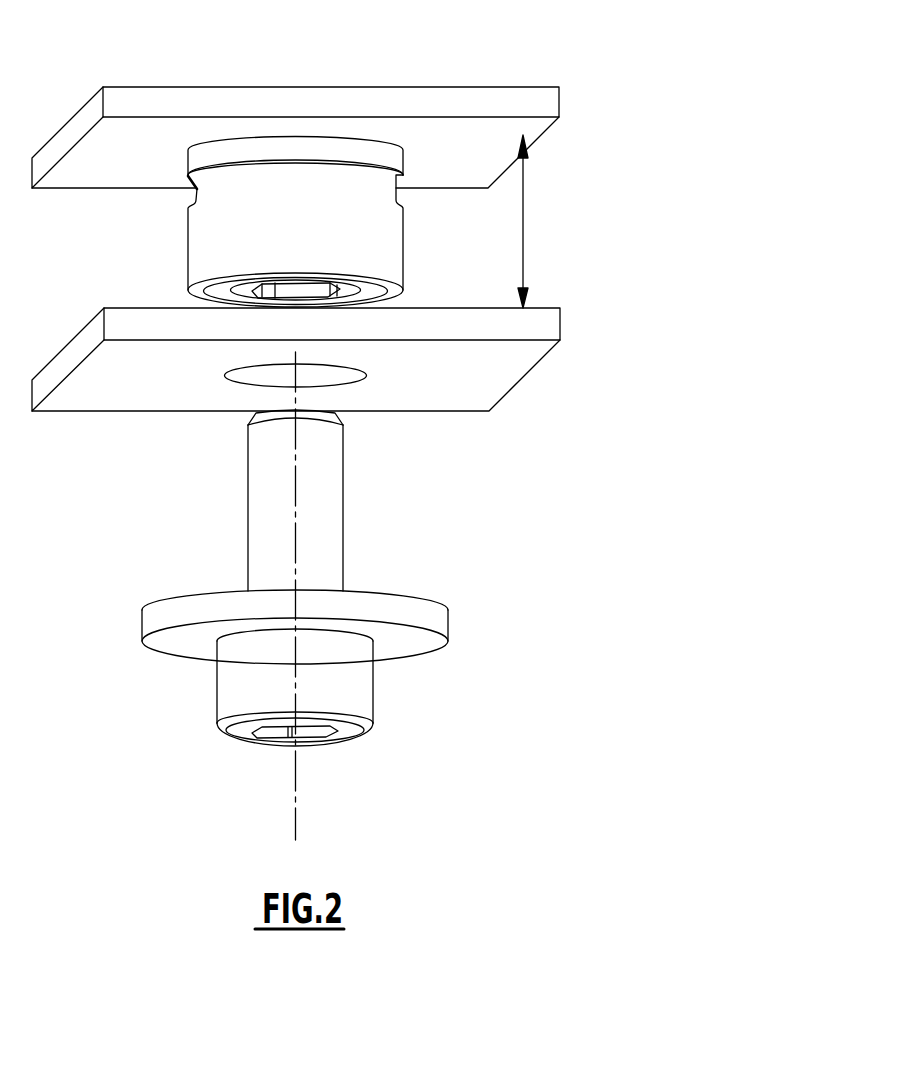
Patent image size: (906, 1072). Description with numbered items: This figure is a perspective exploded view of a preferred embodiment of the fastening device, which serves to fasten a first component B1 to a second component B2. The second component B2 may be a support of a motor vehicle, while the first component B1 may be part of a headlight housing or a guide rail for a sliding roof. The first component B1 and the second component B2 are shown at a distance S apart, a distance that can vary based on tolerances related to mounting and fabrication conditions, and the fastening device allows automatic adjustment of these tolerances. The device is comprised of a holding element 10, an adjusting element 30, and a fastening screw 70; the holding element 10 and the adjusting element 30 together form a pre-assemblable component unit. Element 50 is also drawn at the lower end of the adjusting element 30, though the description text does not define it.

The holding element 10 is at (193, 167).
The adjusting element 30 is at (403, 262).
The locking element at nut bottom 50 is at (193, 297).
The fastening screw 70 is at (343, 535).
The first component B1 is at (495, 102).
The second component B2 is at (540, 323).
The distance S is at (531, 221).